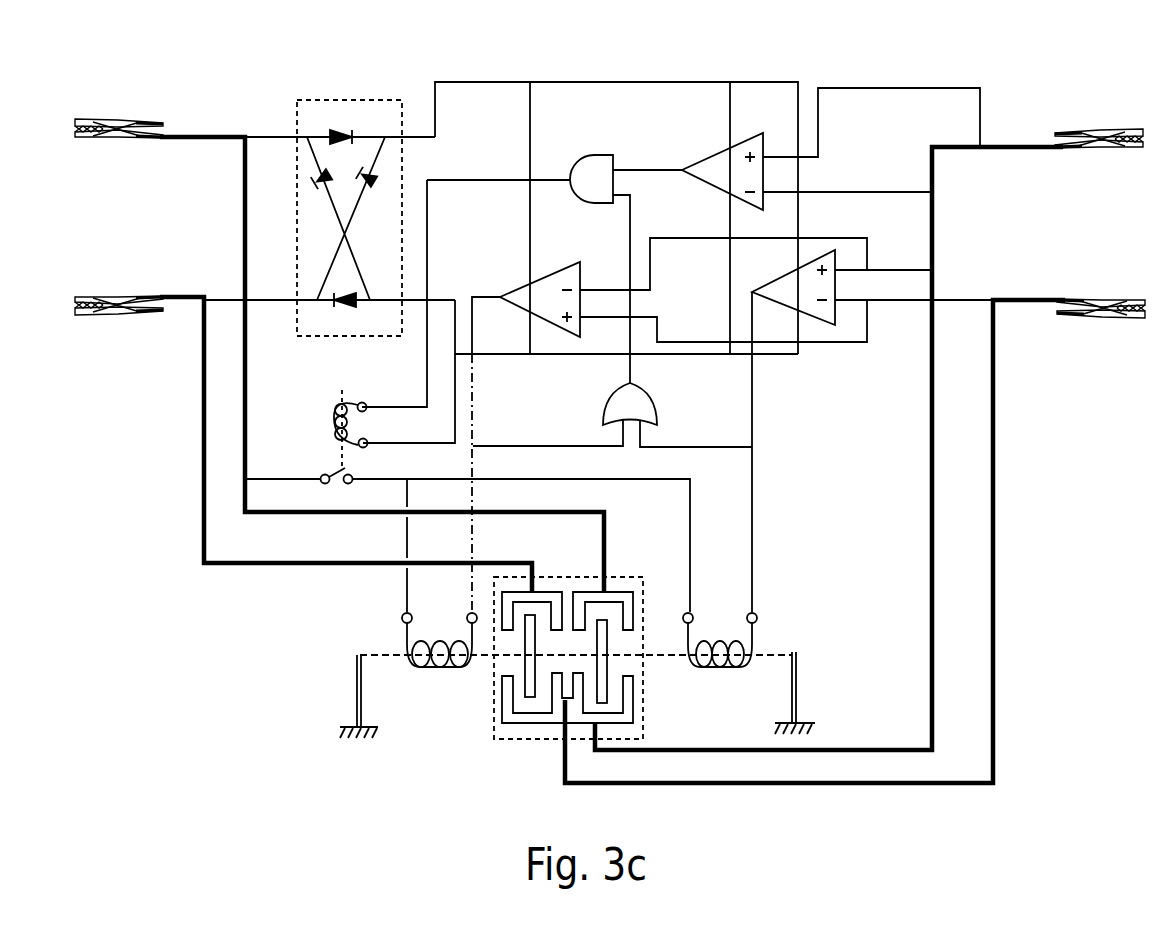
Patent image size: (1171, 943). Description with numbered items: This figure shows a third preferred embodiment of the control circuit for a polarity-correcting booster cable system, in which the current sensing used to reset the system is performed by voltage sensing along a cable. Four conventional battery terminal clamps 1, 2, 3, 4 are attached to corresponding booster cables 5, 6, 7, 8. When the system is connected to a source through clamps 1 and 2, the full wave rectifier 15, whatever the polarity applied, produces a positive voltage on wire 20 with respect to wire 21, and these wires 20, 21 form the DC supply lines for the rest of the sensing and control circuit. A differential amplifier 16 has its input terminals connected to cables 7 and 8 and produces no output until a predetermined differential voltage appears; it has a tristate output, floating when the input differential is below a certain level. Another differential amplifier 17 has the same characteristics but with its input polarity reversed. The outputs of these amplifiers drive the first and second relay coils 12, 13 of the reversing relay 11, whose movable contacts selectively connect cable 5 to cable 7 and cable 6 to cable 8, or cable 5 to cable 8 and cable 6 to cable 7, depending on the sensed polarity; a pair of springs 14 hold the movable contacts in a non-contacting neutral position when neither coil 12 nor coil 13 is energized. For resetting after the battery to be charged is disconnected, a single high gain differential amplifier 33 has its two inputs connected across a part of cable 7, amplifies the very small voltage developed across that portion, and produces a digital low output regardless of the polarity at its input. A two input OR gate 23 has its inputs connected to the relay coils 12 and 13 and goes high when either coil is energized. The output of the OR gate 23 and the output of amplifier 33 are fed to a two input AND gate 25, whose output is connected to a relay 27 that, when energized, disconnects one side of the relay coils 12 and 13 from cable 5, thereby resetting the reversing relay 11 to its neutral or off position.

The battery terminal clamp 1 is at (90, 118).
The battery terminal clamp 2 is at (88, 296).
The battery terminal clamp 3 is at (1106, 130).
The battery terminal clamp 4 is at (1118, 296).
The booster cable 5 is at (198, 133).
The booster cable 6 is at (168, 293).
The booster cable 7 is at (1040, 144).
The booster cable 8 is at (1036, 298).
The reversing relay 11 is at (498, 737).
The first relay coil 12 is at (433, 666).
The second relay coil 13 is at (716, 666).
The spring 14 is at (355, 676).
The full wave rectifier 15 is at (372, 109).
The differential amplifier 16 is at (828, 260).
The differential amplifier 17 is at (522, 295).
The wire 20 is at (632, 82).
The wire 21 is at (540, 357).
The OR gate 23 is at (616, 409).
The AND gate 25 is at (598, 167).
The relay 27 is at (335, 422).
The differential amplifier 33 is at (720, 168).